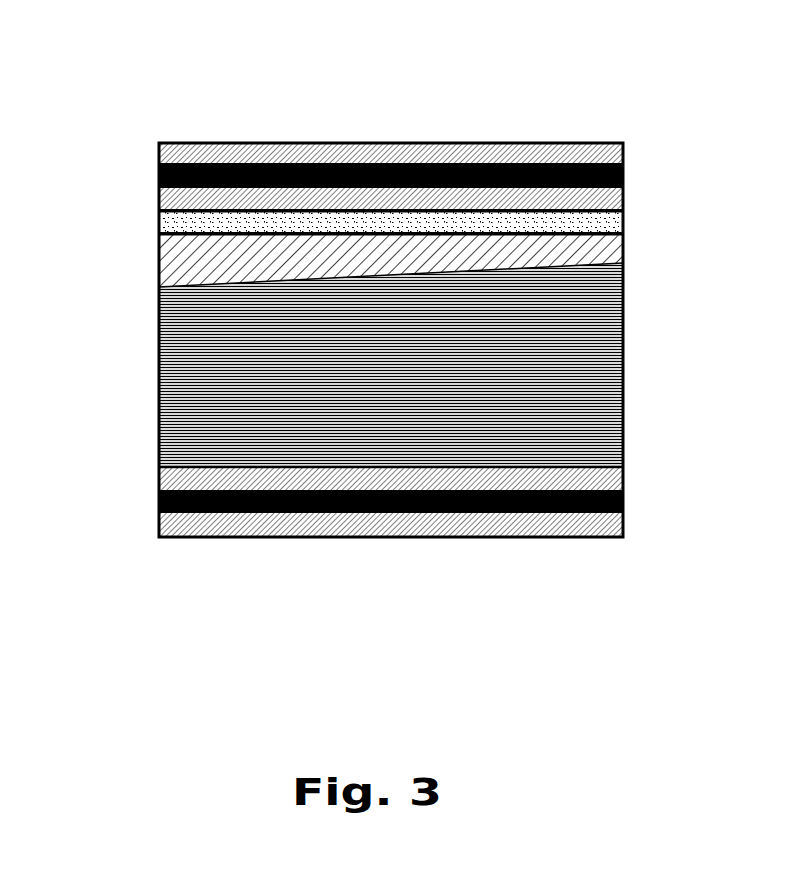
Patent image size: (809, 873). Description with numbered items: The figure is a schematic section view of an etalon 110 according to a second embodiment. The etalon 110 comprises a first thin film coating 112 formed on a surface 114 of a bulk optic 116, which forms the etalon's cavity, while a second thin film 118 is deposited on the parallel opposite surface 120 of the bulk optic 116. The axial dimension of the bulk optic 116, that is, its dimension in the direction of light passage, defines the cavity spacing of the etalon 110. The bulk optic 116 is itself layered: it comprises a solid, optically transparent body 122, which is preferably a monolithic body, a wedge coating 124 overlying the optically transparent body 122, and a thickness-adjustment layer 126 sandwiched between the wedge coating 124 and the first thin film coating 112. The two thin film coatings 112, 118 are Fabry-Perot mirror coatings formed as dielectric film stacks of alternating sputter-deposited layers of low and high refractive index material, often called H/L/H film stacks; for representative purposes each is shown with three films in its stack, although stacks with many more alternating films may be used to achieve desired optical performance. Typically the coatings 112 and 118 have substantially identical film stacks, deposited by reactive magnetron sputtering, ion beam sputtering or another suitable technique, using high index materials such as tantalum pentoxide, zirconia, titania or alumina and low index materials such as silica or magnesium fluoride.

The etalon 110 is at (418, 318).
The first thin film coating 112 is at (150, 143).
The surface 114 is at (533, 245).
The bulk optic 116 is at (418, 237).
The second thin film 118 is at (333, 548).
The parallel opposite surface 120 is at (463, 470).
The optically transparent body 122 is at (624, 370).
The wedge coating 124 is at (342, 257).
The thickness-adjustment layer 126 is at (622, 220).